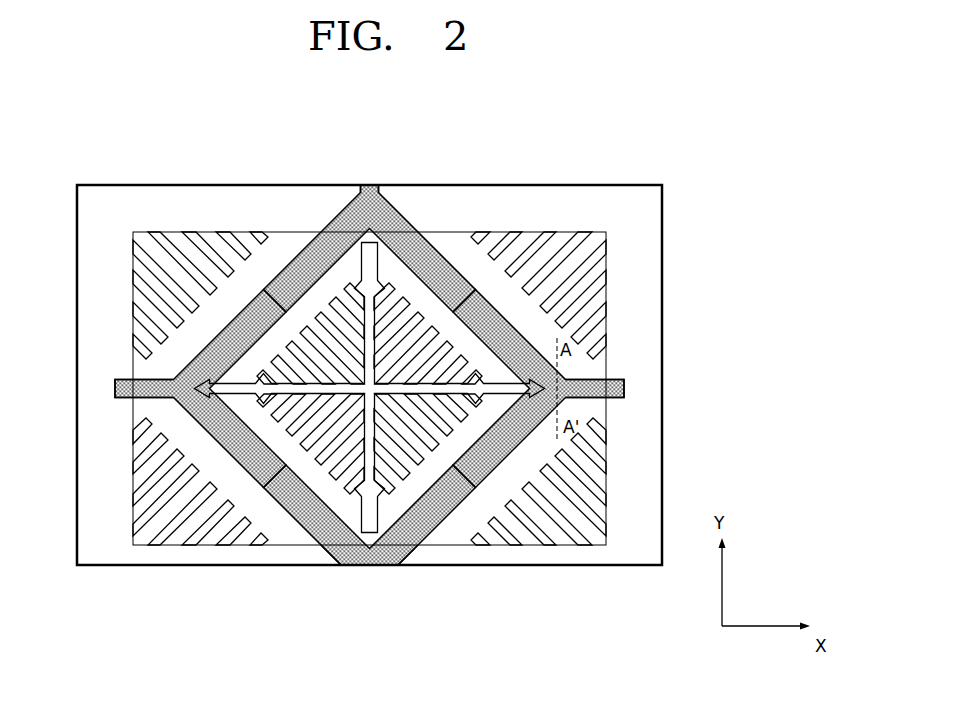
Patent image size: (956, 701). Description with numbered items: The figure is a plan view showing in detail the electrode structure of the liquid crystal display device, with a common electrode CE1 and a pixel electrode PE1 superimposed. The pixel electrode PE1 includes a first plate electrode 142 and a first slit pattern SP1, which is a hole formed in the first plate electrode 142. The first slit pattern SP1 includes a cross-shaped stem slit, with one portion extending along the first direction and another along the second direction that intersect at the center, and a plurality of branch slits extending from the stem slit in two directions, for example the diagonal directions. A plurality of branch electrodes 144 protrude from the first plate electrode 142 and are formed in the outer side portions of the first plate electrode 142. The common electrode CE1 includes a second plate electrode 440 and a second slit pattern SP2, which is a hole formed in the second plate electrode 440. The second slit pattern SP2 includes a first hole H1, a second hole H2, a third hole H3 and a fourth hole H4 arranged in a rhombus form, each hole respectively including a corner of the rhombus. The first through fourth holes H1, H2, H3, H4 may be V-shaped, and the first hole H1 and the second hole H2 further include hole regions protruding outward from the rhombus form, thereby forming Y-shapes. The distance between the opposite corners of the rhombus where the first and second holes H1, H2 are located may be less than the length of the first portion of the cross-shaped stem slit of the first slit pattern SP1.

The common electrode CE1 is at (668, 261).
The second plate electrode 440 is at (648, 322).
The pixel electrode PE1 is at (284, 538).
The first hole H1 is at (168, 376).
The second hole H2 is at (538, 444).
The third hole H3 is at (384, 555).
The fourth hole H4 is at (392, 218).
The first slit pattern SP1 is at (410, 489).
The second slit pattern SP2 is at (451, 245).
The first plate electrode 142 is at (333, 496).
The branch electrodes 144 is at (174, 525).